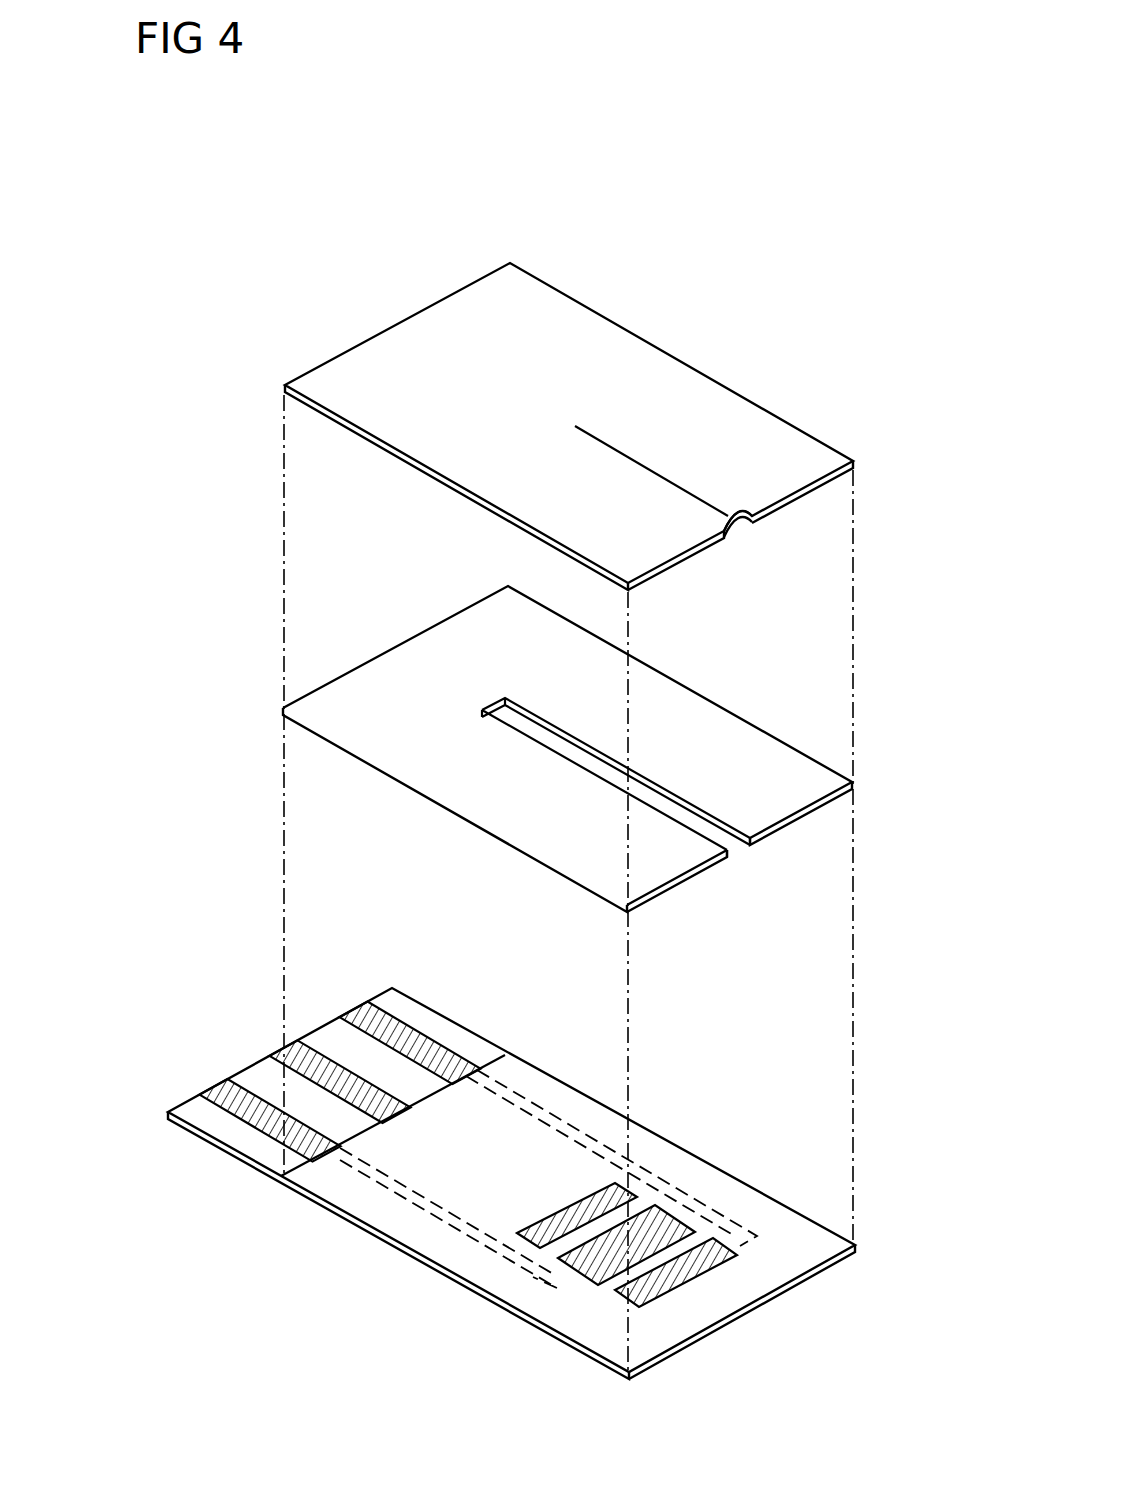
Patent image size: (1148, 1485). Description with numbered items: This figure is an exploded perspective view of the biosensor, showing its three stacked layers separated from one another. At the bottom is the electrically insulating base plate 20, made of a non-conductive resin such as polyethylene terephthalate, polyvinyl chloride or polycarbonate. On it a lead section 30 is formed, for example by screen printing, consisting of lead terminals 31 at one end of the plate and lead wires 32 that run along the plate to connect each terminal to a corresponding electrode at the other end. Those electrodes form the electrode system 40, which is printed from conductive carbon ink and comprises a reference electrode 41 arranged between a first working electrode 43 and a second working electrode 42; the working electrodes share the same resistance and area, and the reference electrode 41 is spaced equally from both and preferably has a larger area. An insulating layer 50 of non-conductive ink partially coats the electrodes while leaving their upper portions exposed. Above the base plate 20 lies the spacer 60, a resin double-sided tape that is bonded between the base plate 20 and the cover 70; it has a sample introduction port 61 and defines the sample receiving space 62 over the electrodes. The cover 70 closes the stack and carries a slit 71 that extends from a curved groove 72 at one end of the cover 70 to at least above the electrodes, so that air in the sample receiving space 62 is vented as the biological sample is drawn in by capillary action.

The electrically insulating base plate 20 is at (447, 1281).
The lead section 30 is at (479, 1103).
The lead terminals 31 is at (512, 1100).
The lead wires 32 is at (430, 1052).
The electrode system 40 is at (654, 1174).
The reference electrode 41 is at (665, 1217).
The second working electrode 42 is at (606, 1185).
The first working electrode 43 is at (713, 1242).
The insulating layer 50 is at (552, 1158).
The spacer 60 is at (408, 652).
The sample introduction port 61 is at (720, 835).
The sample receiving space 62 is at (518, 723).
The cover 70 is at (627, 357).
The slit 71 is at (692, 490).
The curved groove 72 is at (738, 523).